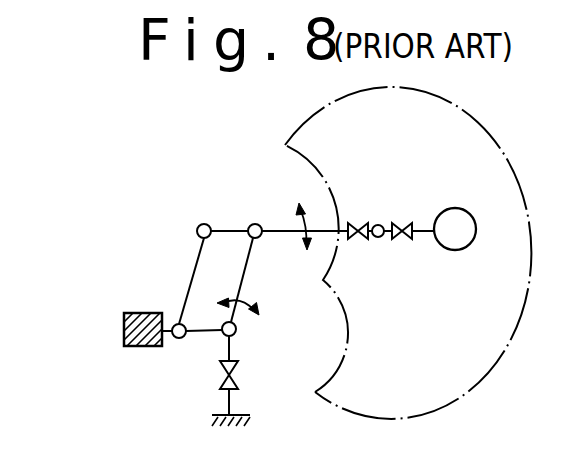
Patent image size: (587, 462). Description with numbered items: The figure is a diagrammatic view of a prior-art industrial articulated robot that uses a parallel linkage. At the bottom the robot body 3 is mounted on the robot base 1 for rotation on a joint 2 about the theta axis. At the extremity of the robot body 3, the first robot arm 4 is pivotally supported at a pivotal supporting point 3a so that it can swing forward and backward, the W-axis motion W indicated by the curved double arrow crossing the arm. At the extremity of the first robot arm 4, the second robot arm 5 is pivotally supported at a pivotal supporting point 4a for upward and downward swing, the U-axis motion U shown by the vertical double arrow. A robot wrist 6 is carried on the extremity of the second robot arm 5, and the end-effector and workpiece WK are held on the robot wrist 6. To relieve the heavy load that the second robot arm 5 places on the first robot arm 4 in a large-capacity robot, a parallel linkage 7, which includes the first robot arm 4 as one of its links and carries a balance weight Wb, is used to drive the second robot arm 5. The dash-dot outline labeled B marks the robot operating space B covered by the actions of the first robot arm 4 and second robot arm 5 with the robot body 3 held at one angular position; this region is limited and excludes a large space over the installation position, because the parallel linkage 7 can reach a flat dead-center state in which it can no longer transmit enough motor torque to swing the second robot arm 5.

The robot base 1 is at (230, 404).
The joint 2 is at (240, 380).
The robot body 3 is at (227, 352).
The pivotal supporting point 3a is at (237, 332).
The first robot arm 4 is at (246, 272).
The pivotal supporting point 4a is at (251, 225).
The second robot arm 5 is at (328, 230).
The robot wrist 6 is at (418, 236).
The parallel linkage 7 is at (192, 272).
The balance weight Wb is at (124, 342).
The robot operating space B is at (447, 343).
The end-effector and workpiece WK is at (455, 229).
The U-axis motion U is at (298, 206).
The W-axis motion W is at (260, 303).